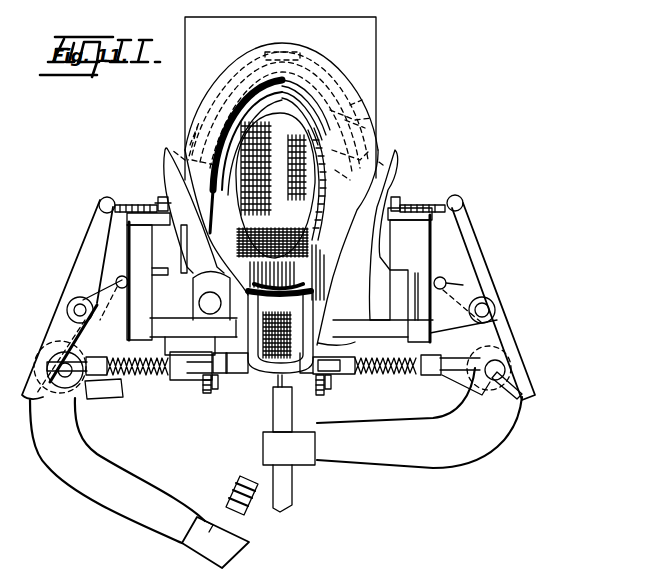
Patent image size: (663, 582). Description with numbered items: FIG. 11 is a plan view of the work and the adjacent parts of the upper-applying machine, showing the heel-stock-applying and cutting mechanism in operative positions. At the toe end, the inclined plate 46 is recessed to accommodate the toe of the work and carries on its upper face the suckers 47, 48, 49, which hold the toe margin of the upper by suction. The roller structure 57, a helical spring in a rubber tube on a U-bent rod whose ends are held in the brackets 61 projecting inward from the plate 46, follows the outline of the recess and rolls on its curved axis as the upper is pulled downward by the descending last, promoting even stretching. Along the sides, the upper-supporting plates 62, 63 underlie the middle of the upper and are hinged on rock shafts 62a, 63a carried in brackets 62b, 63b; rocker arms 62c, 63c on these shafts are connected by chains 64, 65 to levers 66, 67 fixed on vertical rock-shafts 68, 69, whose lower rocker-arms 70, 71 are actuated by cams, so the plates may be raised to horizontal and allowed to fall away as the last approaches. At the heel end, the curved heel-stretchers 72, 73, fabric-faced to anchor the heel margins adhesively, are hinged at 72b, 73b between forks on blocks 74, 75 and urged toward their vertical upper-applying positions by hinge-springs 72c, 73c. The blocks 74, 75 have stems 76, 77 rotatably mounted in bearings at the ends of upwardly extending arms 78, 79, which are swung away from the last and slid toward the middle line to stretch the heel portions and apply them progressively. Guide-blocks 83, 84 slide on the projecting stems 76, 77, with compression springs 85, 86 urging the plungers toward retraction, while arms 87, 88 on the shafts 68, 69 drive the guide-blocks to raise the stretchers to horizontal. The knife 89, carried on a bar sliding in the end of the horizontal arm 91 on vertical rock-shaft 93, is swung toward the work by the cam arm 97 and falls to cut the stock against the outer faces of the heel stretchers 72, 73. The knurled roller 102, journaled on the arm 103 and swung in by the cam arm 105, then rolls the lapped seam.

The inclined plate 46 is at (376, 55).
The sucker 47 is at (238, 60).
The sucker 48 is at (295, 48).
The sucker 49 is at (362, 100).
The roller structure 57 is at (362, 126).
The bracket 61 is at (180, 155).
The upper-supporting plate 62 is at (165, 160).
The rock shaft 62a is at (135, 256).
The bracket 62b is at (130, 238).
The rocker arm 62c is at (162, 204).
The upper-supporting plate 63 is at (400, 160).
The rock shaft 63a is at (438, 250).
The bracket 63b is at (425, 232).
The rocker arm 63c is at (455, 197).
The chain 64 is at (125, 205).
The chain 65 is at (410, 205).
The lever 66 is at (95, 232).
The lever 67 is at (472, 256).
The vertical rock-shaft 68 is at (67, 310).
The vertical rock-shaft 69 is at (489, 310).
The rocker-arm 70 is at (116, 282).
The rocker-arm 71 is at (447, 283).
The heel-stretcher 72 is at (240, 376).
The hinge 72b is at (207, 394).
The hinge-spring 72c is at (210, 393).
The heel-stretcher 73 is at (318, 380).
The hinge 73b is at (330, 395).
The hinge-spring 73c is at (338, 382).
The block 74 is at (180, 381).
The block 75 is at (342, 357).
The stem 76 is at (70, 377).
The stem 77 is at (475, 393).
The upwardly extending arm 78 is at (150, 376).
The upwardly extending arm 79 is at (372, 357).
The guide-block 83 is at (95, 378).
The guide-block 84 is at (431, 376).
The compression spring 85 is at (110, 362).
The compression spring 86 is at (413, 374).
The arm 87 is at (58, 340).
The arm 88 is at (492, 340).
The knife 89 is at (289, 443).
The horizontal arm 91 is at (419, 418).
The vertical rock-shaft 93 is at (519, 400).
The cam arm 97 is at (433, 352).
The knurled roller 102 is at (243, 480).
The arm 103 is at (230, 541).
The cam arm 105 is at (108, 399).